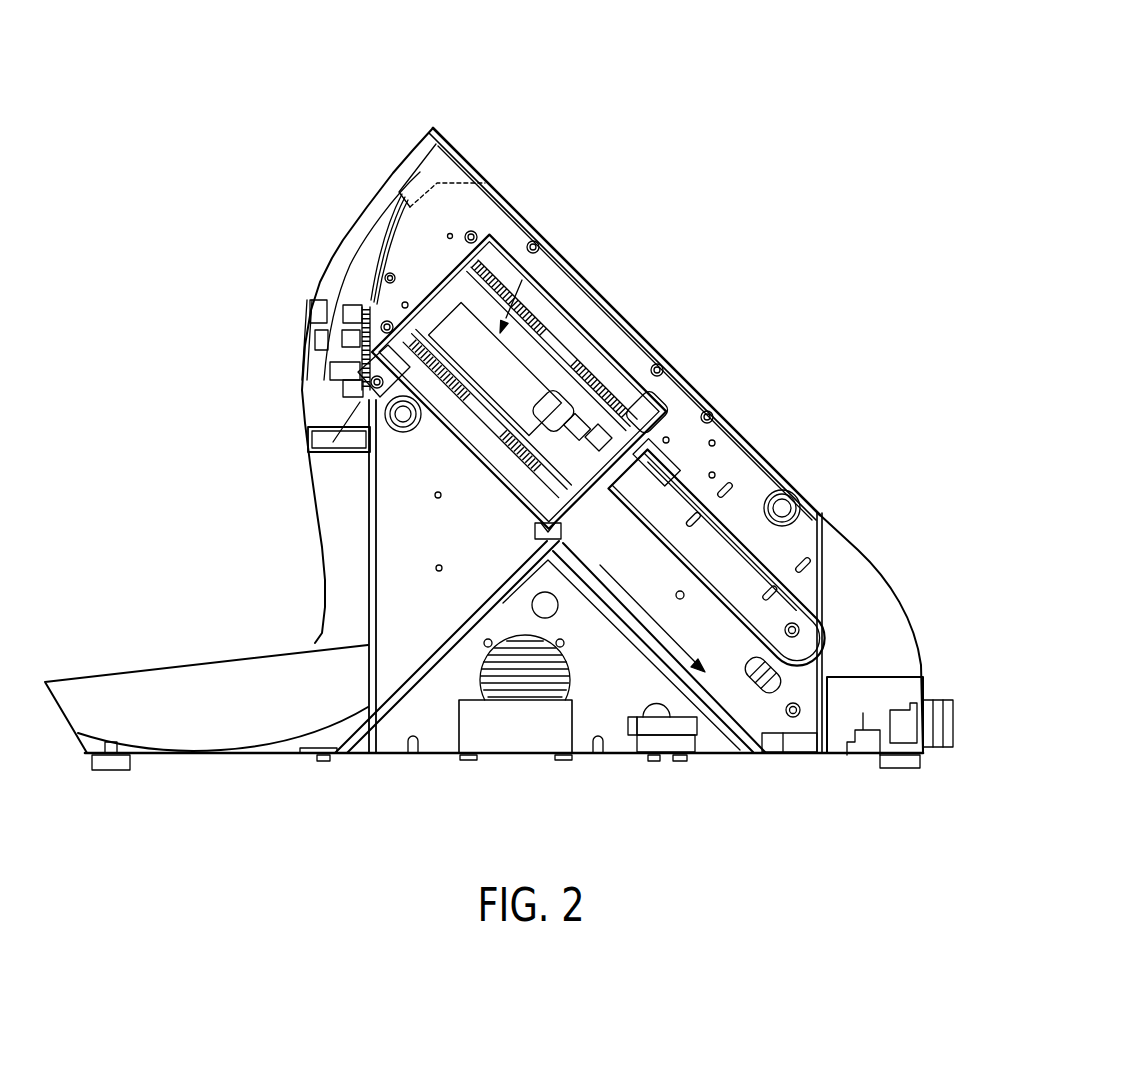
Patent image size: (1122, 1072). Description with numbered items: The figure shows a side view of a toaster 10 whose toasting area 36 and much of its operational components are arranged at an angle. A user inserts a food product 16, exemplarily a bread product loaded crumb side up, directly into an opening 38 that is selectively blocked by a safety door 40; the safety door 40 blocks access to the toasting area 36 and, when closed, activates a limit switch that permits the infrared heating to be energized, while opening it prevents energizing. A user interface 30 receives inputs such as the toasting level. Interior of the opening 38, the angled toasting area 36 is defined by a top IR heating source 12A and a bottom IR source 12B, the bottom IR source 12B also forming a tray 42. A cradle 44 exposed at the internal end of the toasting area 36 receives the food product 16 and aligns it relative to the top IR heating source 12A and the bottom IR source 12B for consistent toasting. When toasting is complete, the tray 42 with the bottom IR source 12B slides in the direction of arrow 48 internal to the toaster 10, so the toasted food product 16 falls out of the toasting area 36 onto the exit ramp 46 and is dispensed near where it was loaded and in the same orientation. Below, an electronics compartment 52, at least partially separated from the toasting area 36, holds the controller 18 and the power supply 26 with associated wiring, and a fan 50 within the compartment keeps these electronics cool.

The toaster 10 is at (752, 97).
The top IR heating source 12A is at (613, 303).
The bottom IR source 12B is at (533, 487).
The food product 16 is at (577, 350).
The controller 18 is at (510, 738).
The power supply 26 is at (667, 745).
The user interface 30 is at (307, 350).
The toasting area 36 is at (527, 383).
The opening 38 is at (428, 226).
The safety door 40 is at (390, 230).
The tray 42 is at (487, 465).
The cradle 44 is at (580, 433).
The exit ramp 46 is at (437, 650).
The arrow 48 is at (657, 617).
The fan 50 is at (563, 664).
The electronics compartment 52 is at (448, 715).